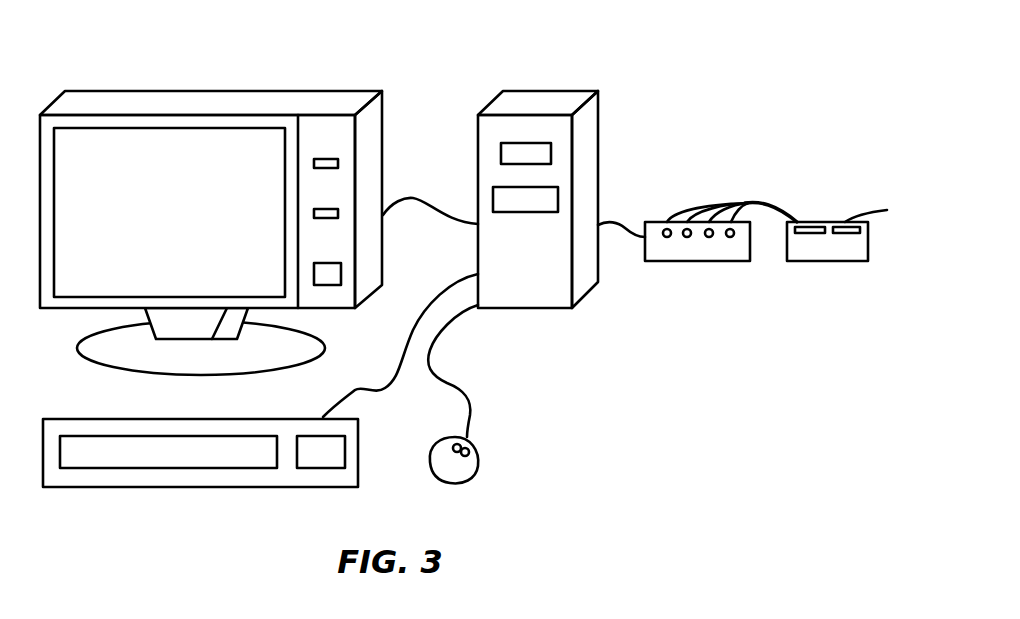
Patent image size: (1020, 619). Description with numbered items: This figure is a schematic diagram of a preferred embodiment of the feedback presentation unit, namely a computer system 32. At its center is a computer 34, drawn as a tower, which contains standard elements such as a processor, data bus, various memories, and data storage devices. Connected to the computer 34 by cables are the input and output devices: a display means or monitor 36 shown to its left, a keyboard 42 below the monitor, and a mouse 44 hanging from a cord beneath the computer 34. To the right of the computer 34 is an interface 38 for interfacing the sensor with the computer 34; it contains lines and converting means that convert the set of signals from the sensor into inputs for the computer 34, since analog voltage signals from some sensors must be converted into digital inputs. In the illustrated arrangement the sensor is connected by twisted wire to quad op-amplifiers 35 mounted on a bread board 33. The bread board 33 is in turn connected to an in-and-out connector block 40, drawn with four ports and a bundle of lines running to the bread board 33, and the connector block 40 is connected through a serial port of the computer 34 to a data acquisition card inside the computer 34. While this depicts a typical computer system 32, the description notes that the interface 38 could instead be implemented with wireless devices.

The computer system 32 is at (662, 415).
The bread board 33 is at (837, 239).
The computer 34 is at (537, 91).
The quad op-amplifiers 35 is at (802, 223).
The monitor 36 is at (238, 91).
The interface 38 is at (700, 170).
The in-and-out connector block 40 is at (700, 261).
The keyboard 42 is at (194, 487).
The mouse 44 is at (478, 466).